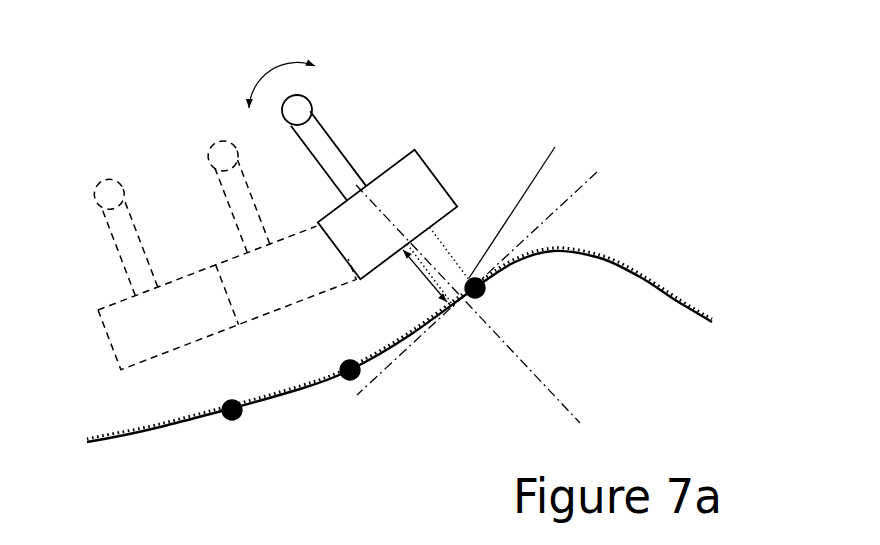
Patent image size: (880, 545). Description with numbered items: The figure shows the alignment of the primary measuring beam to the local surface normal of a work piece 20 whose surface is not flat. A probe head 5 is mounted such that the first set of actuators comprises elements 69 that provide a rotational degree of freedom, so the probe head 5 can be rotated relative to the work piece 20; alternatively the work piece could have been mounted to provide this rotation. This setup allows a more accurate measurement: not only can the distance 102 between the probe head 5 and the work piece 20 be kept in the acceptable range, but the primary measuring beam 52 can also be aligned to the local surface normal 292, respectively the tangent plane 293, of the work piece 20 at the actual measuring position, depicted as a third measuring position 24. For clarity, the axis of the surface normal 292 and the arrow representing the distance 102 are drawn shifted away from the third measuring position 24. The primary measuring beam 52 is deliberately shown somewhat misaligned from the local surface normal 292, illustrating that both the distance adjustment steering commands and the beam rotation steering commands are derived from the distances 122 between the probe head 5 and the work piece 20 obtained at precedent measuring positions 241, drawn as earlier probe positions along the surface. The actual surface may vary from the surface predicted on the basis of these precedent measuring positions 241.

The probe head 5 is at (437, 179).
The work piece 20 is at (145, 458).
The third measuring position 24 is at (483, 297).
The primary measuring beam 52 is at (555, 147).
The elements of the first set of actuators 69 is at (310, 97).
The distance 102 is at (437, 290).
The distances 122 is at (317, 303).
The precedent measuring positions 241 is at (349, 381).
The local surface normal 292 is at (533, 370).
The tangent plane 293 is at (597, 170).